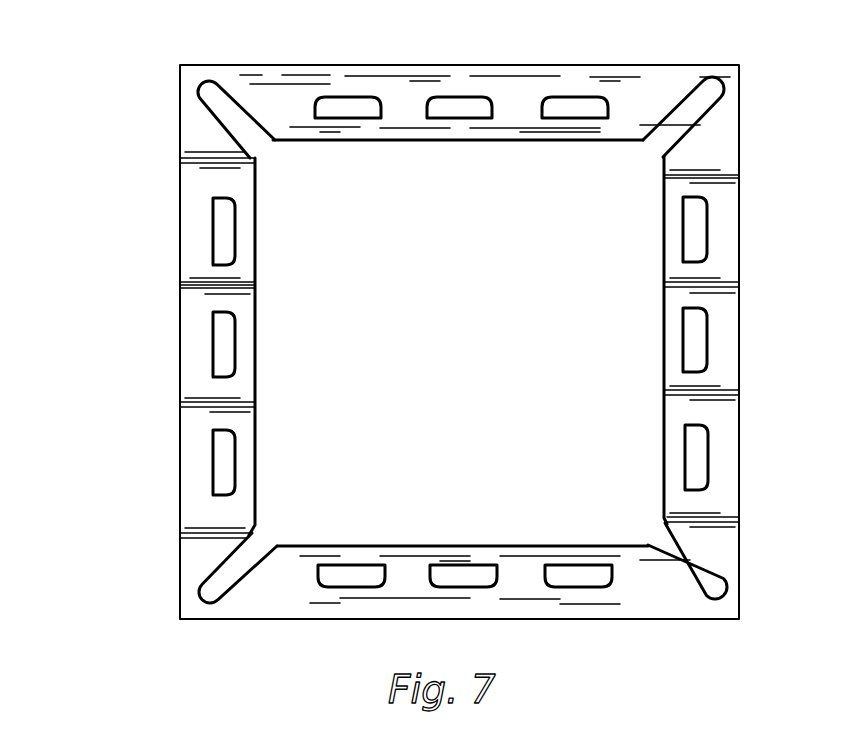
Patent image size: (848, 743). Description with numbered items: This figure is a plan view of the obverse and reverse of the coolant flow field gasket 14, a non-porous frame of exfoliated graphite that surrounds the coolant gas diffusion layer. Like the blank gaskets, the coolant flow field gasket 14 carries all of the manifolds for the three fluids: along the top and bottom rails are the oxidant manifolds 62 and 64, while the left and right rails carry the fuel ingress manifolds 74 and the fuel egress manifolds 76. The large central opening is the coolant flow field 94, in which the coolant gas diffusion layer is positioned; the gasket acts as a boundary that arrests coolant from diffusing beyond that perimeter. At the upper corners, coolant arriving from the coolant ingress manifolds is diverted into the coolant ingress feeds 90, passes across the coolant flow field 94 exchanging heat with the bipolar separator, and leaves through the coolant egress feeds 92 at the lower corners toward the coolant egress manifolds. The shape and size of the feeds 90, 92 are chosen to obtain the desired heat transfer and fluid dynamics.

The coolant flow field gasket 14 is at (118, 388).
The oxidant manifold 62 is at (354, 96).
The oxidant manifold 64 is at (353, 588).
The fuel ingress manifold 74 is at (214, 229).
The fuel egress manifold 76 is at (700, 236).
The coolant ingress feed 90 is at (204, 90).
The coolant egress feed 92 is at (214, 594).
The coolant flow field 94 is at (255, 303).